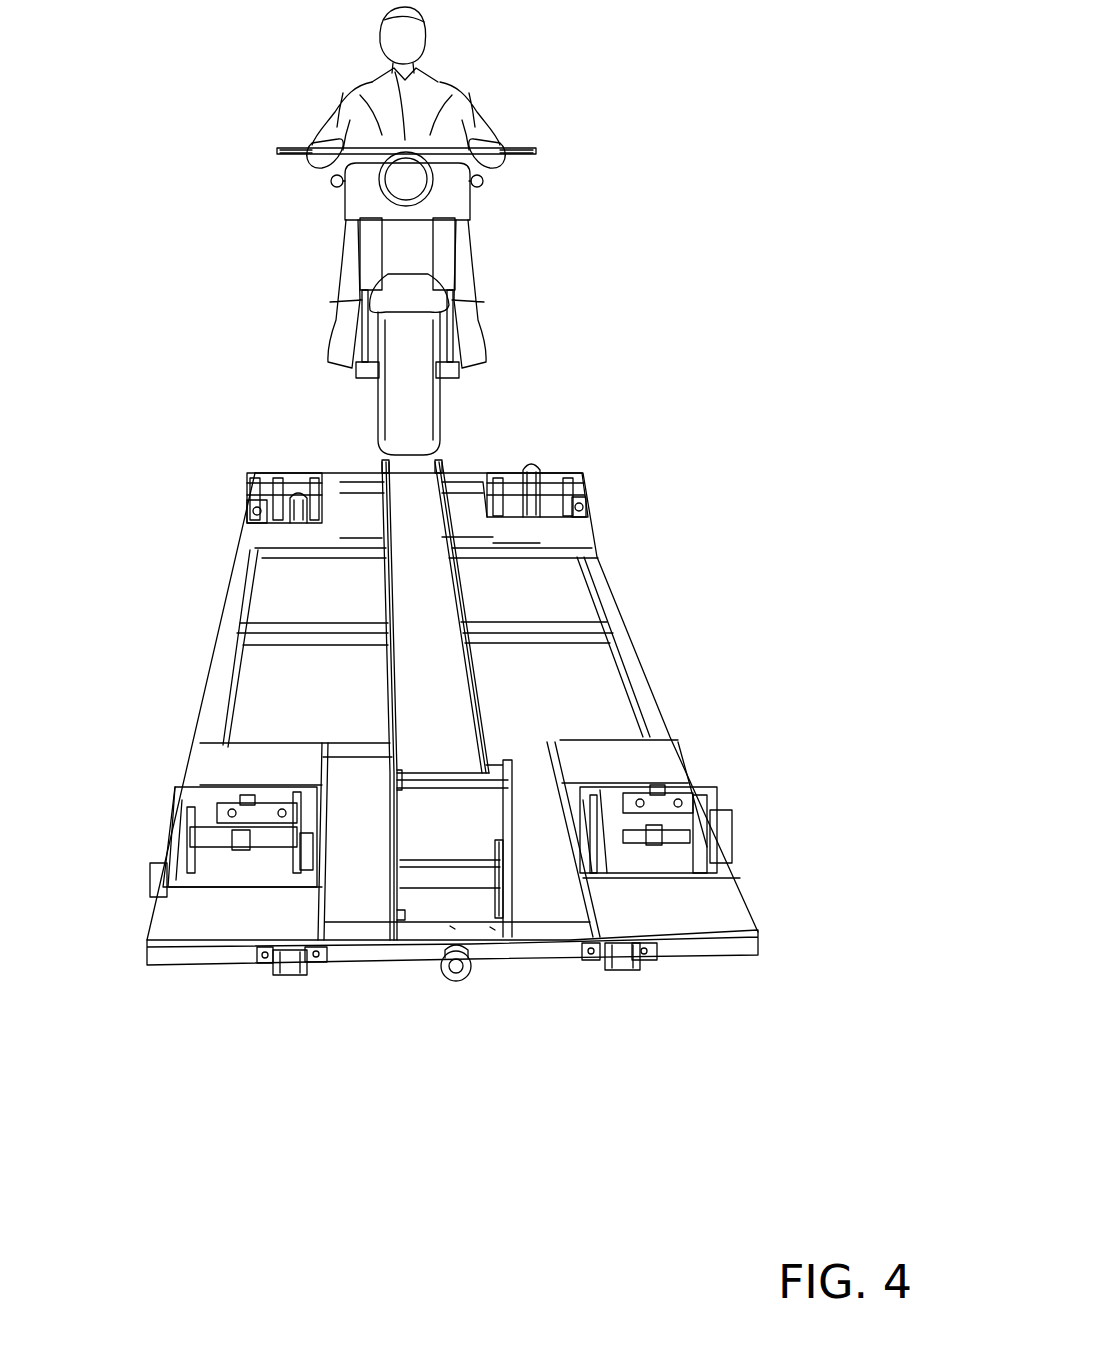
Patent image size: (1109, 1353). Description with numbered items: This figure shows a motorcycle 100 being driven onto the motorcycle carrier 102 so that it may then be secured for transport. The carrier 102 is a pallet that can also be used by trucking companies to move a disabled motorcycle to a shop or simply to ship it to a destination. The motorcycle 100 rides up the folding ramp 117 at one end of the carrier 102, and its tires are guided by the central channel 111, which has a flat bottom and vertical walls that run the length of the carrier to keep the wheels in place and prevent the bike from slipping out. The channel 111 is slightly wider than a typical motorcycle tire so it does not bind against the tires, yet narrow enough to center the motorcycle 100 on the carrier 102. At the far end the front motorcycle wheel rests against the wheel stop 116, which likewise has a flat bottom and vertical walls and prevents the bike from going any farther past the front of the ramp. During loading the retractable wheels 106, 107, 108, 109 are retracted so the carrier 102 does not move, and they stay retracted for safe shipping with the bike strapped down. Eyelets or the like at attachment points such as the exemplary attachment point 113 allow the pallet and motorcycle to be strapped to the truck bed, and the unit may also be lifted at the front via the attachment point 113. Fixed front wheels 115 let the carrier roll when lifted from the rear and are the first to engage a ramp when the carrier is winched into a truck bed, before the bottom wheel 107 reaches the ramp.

The motorcycle 100 is at (458, 197).
The motorcycle carrier 102 is at (830, 992).
The retractable wheel 106 is at (232, 795).
The retractable wheel 107 is at (632, 830).
The retractable wheel 108 is at (255, 475).
The retractable wheel 109 is at (585, 490).
The central channel 111 is at (435, 723).
The attachment point 113 is at (457, 982).
The front wheel 115 is at (293, 960).
The wheel stop 116 is at (417, 903).
The folding ramp 117 is at (442, 465).